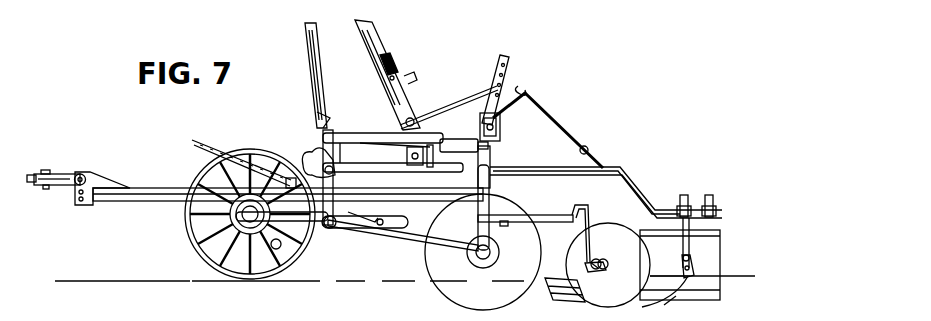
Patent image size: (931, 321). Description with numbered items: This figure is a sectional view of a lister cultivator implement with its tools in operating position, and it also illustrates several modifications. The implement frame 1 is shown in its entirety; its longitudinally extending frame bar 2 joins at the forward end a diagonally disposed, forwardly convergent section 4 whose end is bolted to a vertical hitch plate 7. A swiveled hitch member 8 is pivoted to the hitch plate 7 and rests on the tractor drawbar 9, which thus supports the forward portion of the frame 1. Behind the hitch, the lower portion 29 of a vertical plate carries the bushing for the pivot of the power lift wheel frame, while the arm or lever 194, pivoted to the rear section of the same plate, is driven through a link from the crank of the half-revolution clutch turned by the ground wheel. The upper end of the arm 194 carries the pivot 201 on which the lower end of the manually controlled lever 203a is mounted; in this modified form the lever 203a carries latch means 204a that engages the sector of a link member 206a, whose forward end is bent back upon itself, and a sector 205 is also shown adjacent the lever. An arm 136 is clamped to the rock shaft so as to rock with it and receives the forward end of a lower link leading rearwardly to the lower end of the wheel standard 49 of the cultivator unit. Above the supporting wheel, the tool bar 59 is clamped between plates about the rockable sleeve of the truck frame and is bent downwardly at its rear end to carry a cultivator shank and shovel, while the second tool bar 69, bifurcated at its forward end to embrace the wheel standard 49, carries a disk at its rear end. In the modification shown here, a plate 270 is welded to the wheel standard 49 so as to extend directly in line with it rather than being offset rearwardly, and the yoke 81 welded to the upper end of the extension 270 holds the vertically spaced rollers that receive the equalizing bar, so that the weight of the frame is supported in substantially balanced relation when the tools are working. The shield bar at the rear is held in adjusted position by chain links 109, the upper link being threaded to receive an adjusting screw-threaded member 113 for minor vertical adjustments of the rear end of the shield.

The implement frame 1 is at (155, 186).
The longitudinal frame bar 2 is at (372, 200).
The forwardly convergent frame bar section 4 is at (163, 203).
The vertical hitch plate 7 is at (95, 182).
The swiveled hitch member 8 is at (63, 172).
The drawbar 9 is at (32, 175).
The lower plate portion 29 is at (380, 226).
The wheel standard 49 is at (490, 206).
The tool bar 59 is at (625, 182).
The second tool bar 69 is at (575, 213).
The yoke 81 is at (497, 141).
The chain links 109 is at (588, 147).
The adjusting screw-threaded member 113 is at (525, 90).
The rock shaft arm 136 is at (338, 222).
The lift arm 194 is at (415, 228).
The pivot bolt 201 is at (410, 152).
The hand lever 203a is at (400, 100).
The latch means 204a is at (388, 63).
The sector 205 is at (372, 95).
The link member 206a is at (384, 92).
The wheel standard extension plate 270 is at (468, 140).